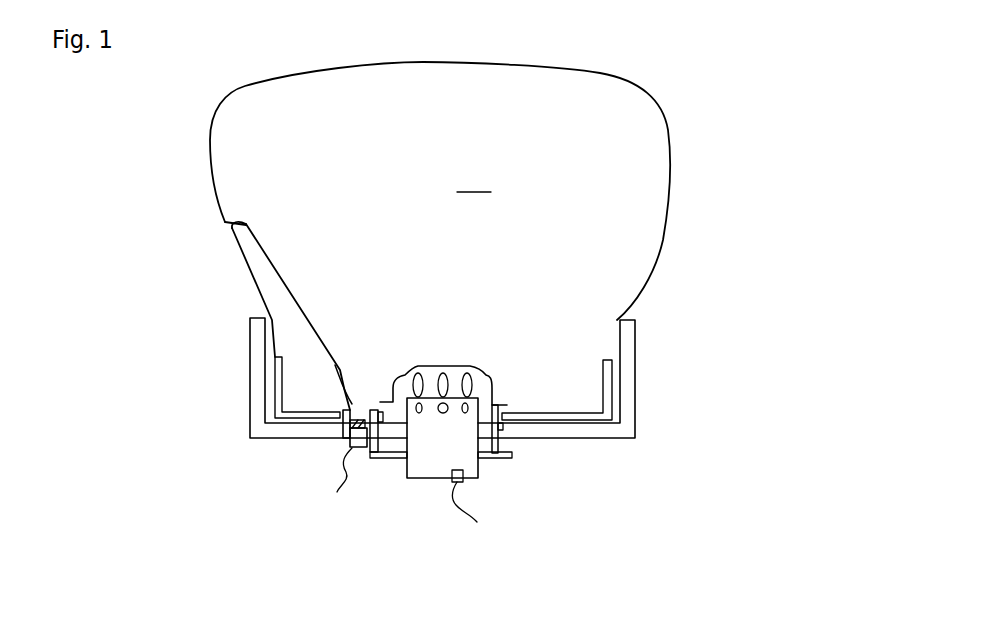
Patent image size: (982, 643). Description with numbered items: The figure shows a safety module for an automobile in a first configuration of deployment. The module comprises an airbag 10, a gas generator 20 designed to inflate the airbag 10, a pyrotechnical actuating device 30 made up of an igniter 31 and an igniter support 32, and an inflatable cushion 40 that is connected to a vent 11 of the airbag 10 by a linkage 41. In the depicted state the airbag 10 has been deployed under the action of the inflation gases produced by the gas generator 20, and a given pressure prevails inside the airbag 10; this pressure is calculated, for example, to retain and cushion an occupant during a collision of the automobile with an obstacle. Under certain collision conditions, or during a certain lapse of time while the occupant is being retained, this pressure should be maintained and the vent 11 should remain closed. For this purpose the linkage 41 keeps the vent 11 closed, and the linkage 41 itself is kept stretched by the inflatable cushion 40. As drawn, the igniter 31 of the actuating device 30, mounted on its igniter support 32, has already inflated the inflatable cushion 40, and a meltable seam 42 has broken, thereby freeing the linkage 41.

The airbag 10 is at (595, 263).
The vent 11 is at (225, 222).
The gas generator 20 is at (455, 452).
The pyrotechnical actuating device 30 is at (212, 458).
The igniter 31 is at (348, 437).
The igniter support 32 is at (325, 428).
The inflatable cushion 40 is at (327, 395).
The linkage 41 is at (277, 302).
The meltable seam 42 is at (325, 355).